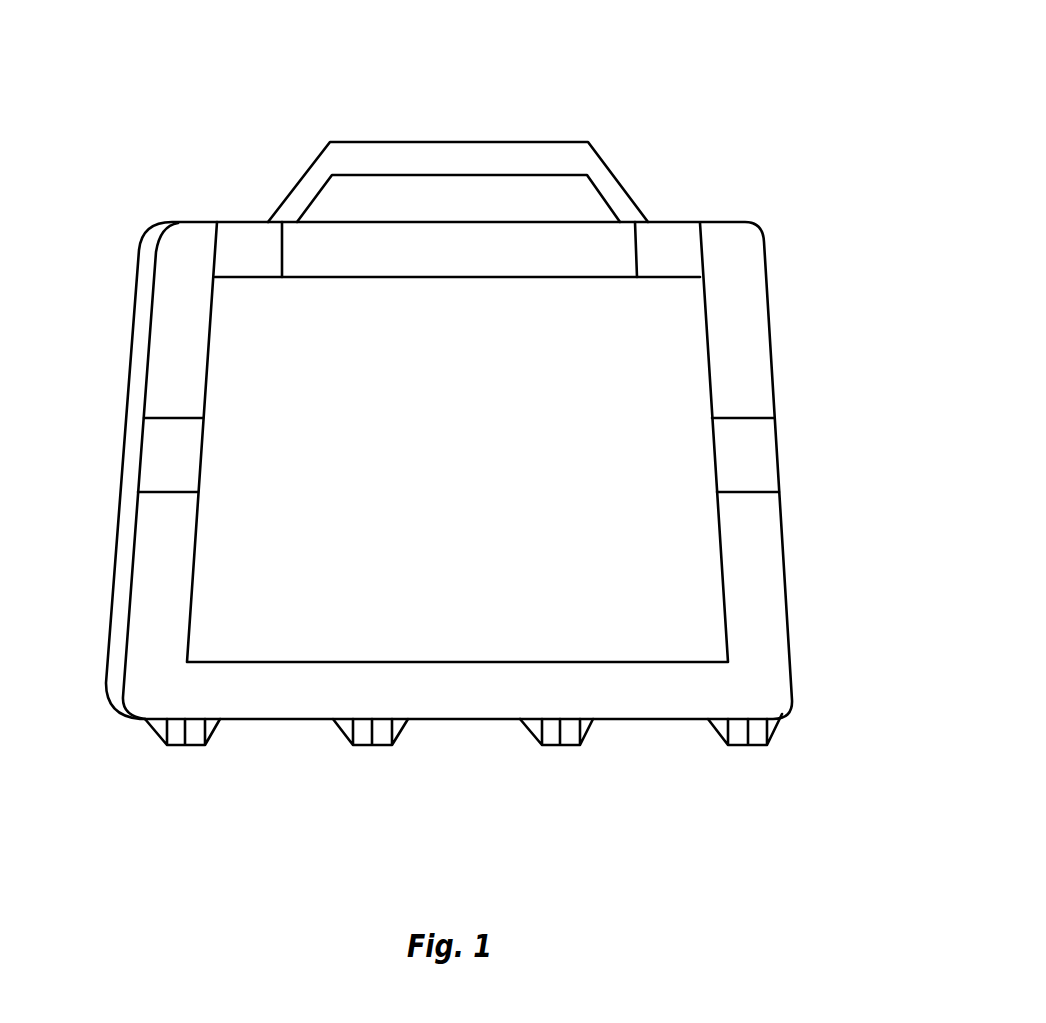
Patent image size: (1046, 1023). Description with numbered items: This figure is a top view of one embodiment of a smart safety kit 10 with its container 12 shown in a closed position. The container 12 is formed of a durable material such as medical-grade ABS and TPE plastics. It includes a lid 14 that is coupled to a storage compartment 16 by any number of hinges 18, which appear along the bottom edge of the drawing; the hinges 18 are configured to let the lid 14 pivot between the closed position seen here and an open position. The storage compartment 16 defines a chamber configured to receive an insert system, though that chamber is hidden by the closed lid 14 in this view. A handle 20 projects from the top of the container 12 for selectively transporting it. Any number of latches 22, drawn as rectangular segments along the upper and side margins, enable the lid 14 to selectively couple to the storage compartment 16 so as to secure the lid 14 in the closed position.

The smart safety kit 10 is at (767, 86).
The container 12 is at (723, 352).
The lid 14 is at (205, 553).
The storage compartment 16 is at (132, 321).
The hinges 18 is at (173, 748).
The handle 20 is at (484, 141).
The latches 22 is at (247, 240).